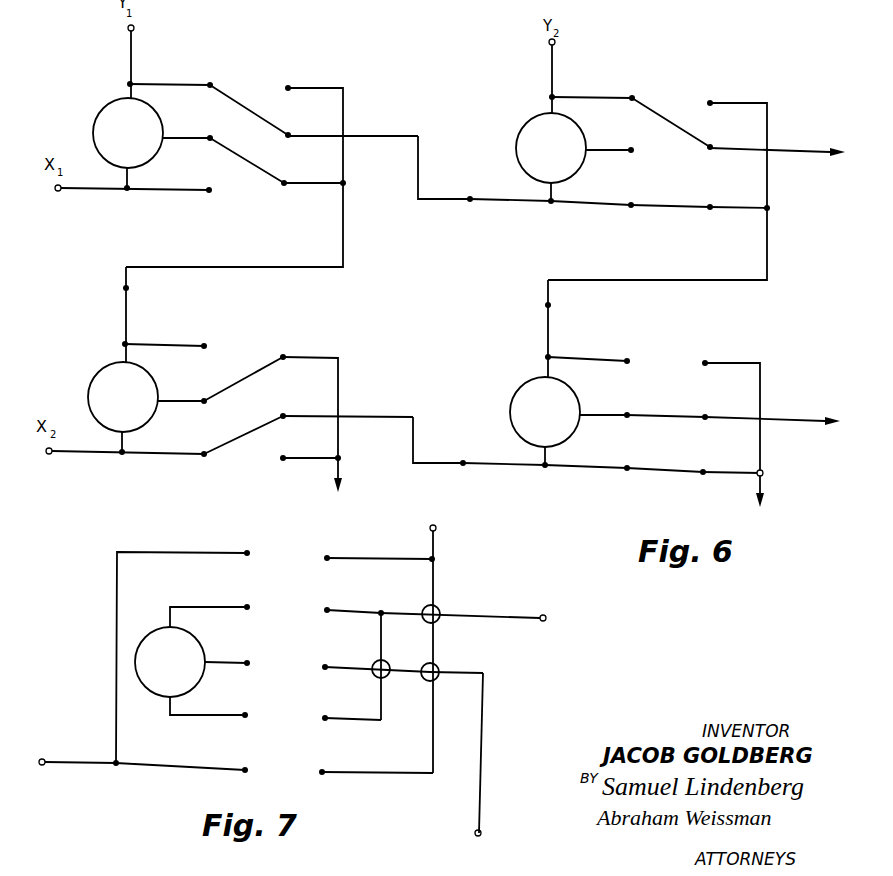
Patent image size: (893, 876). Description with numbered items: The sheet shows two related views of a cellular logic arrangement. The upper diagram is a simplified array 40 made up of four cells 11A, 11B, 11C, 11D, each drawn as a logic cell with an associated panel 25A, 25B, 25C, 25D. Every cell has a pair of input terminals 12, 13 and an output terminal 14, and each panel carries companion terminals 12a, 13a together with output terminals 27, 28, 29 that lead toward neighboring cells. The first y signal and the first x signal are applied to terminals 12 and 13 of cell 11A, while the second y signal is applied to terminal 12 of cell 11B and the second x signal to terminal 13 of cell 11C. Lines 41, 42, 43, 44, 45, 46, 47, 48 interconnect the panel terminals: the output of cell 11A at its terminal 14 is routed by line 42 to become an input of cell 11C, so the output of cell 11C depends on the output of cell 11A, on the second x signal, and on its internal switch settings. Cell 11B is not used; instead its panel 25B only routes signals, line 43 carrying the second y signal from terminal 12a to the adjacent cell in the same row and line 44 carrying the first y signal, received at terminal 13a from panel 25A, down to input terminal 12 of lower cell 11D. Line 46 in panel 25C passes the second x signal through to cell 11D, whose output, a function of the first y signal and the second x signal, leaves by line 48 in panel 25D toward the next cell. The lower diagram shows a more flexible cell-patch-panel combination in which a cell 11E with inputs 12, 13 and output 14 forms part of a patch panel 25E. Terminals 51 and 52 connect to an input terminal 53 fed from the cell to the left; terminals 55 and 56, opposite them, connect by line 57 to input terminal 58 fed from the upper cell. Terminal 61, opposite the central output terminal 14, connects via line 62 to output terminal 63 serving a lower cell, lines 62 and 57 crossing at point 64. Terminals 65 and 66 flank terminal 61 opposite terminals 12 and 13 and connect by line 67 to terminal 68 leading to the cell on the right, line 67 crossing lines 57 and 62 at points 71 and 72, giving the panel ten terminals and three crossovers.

In FIG. 6, the cell 11A is at (101, 108).
In FIG. 6, the cell 11B is at (523, 122).
In FIG. 6, the cell 11C is at (91, 377).
In FIG. 6, the cell 11D is at (520, 388).
In FIG. 7, the cell 11E is at (148, 628).
In FIG. 6, the input terminal 12 is at (134, 29).
In FIG. 7, the input terminal 12 is at (247, 605).
In FIG. 6, the terminal 12a is at (210, 83).
In FIG. 6, the input terminal 13 is at (462, 474).
In FIG. 7, the input terminal 13 is at (246, 713).
In FIG. 6, the terminal 13a is at (208, 192).
In FIG. 6, the output terminal 14 is at (211, 136).
In FIG. 7, the output terminal 14 is at (250, 660).
In FIG. 6, the panel 25A is at (265, 50).
In FIG. 6, the panel 25B is at (670, 64).
In FIG. 6, the panel 25C is at (255, 323).
In FIG. 6, the panel 25D is at (667, 338).
In FIG. 7, the patch panel 25E is at (67, 612).
In FIG. 6, the first output terminal 27 is at (289, 86).
In FIG. 6, the second output terminal 28 is at (286, 182).
In FIG. 6, the third output terminal 29 is at (290, 134).
In FIG. 6, the array 40 is at (440, 286).
In FIG. 6, the line 41 is at (248, 107).
In FIG. 6, the line 42 is at (246, 161).
In FIG. 6, the line 43 is at (676, 126).
In FIG. 6, the line 44 is at (664, 207).
In FIG. 6, the line 45 is at (251, 376).
In FIG. 6, the line 46 is at (241, 436).
In FIG. 6, the line 47 is at (653, 470).
In FIG. 6, the line 48 is at (653, 413).
In FIG. 7, the terminal 51 is at (247, 551).
In FIG. 7, the terminal 52 is at (246, 767).
In FIG. 7, the input terminal 53 is at (40, 765).
In FIG. 7, the terminal 55 is at (330, 556).
In FIG. 7, the terminal 56 is at (326, 762).
In FIG. 7, the line 57 is at (437, 573).
In FIG. 7, the input terminal 58 is at (436, 527).
In FIG. 7, the terminal 61 is at (330, 658).
In FIG. 7, the line 62 is at (483, 713).
In FIG. 7, the output terminal 63 is at (481, 830).
In FIG. 7, the point 64 is at (438, 665).
In FIG. 7, the terminal 65 is at (332, 600).
In FIG. 7, the terminal 66 is at (330, 708).
In FIG. 7, the line 67 is at (381, 707).
In FIG. 7, the terminal 68 is at (544, 614).
In FIG. 7, the point 71 is at (441, 608).
In FIG. 7, the point 72 is at (387, 661).